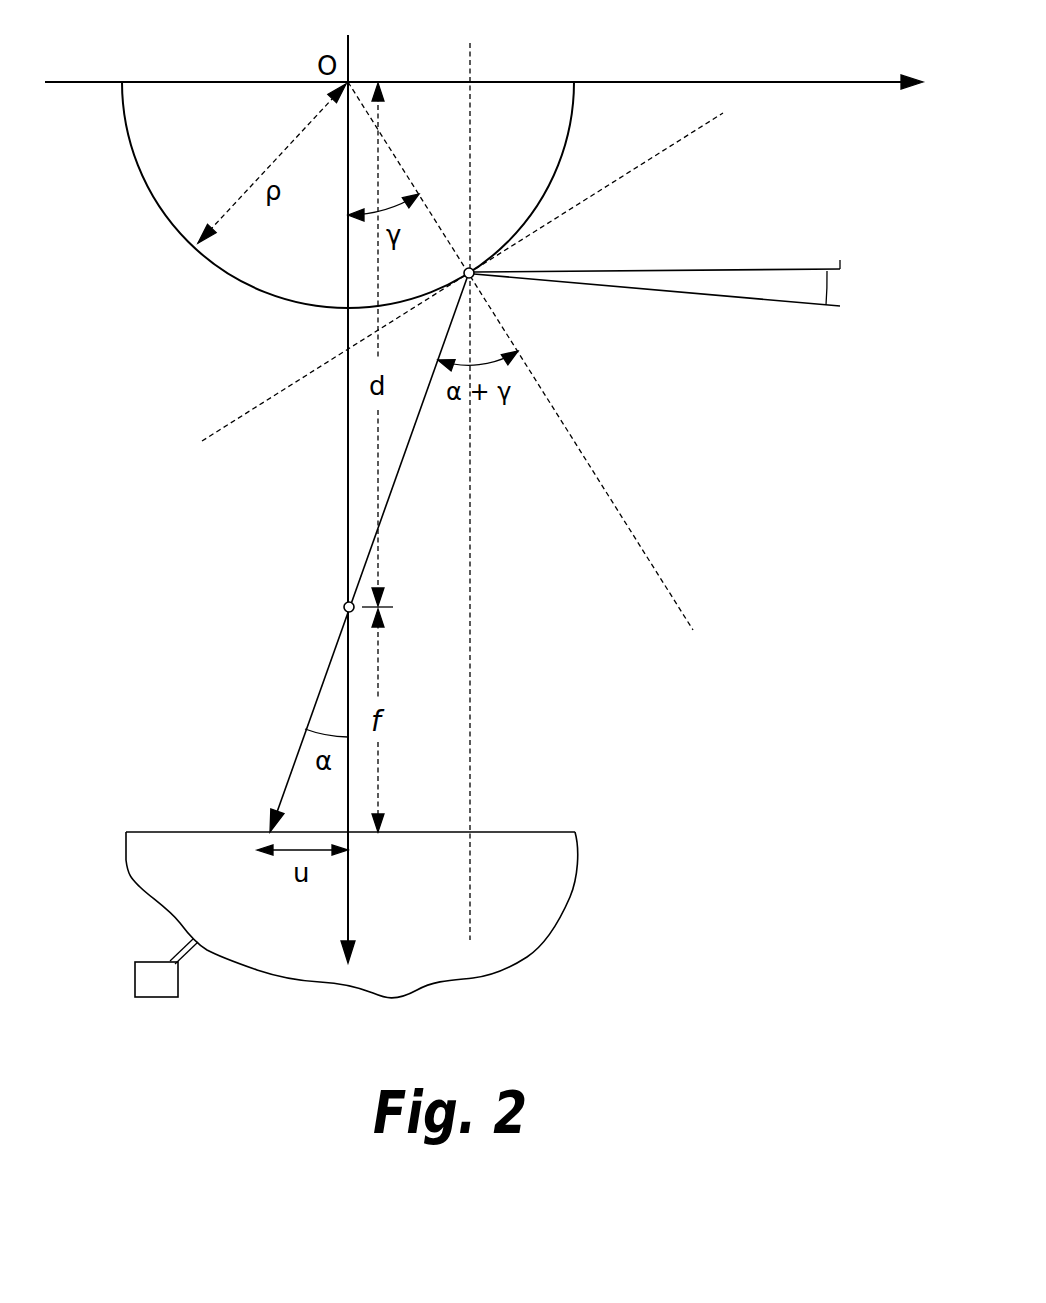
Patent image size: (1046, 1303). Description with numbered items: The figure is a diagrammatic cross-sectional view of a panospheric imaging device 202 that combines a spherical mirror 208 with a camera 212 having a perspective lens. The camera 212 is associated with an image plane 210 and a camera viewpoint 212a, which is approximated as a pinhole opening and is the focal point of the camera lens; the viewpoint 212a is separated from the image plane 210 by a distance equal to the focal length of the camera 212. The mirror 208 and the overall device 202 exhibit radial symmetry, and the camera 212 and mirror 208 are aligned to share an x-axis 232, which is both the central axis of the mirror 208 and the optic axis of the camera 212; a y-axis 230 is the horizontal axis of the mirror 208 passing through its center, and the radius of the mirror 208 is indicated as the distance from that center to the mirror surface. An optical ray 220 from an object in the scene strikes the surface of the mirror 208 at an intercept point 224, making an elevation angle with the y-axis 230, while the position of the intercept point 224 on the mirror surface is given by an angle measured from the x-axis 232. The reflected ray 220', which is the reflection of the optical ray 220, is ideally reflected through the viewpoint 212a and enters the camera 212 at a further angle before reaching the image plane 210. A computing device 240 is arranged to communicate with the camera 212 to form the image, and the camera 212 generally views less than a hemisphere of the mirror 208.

The panospheric imaging device 202 is at (808, 835).
The spherical mirror 208 is at (570, 108).
The image plane 210 is at (532, 832).
The camera 212 is at (557, 923).
The camera viewpoint 212a is at (344, 607).
The optical ray 220 is at (667, 326).
The reflected ray 220' is at (368, 555).
The intercept point 224 is at (476, 281).
The y-axis 230 is at (860, 82).
The x-axis 232 is at (345, 911).
The computing device 240 is at (133, 978).